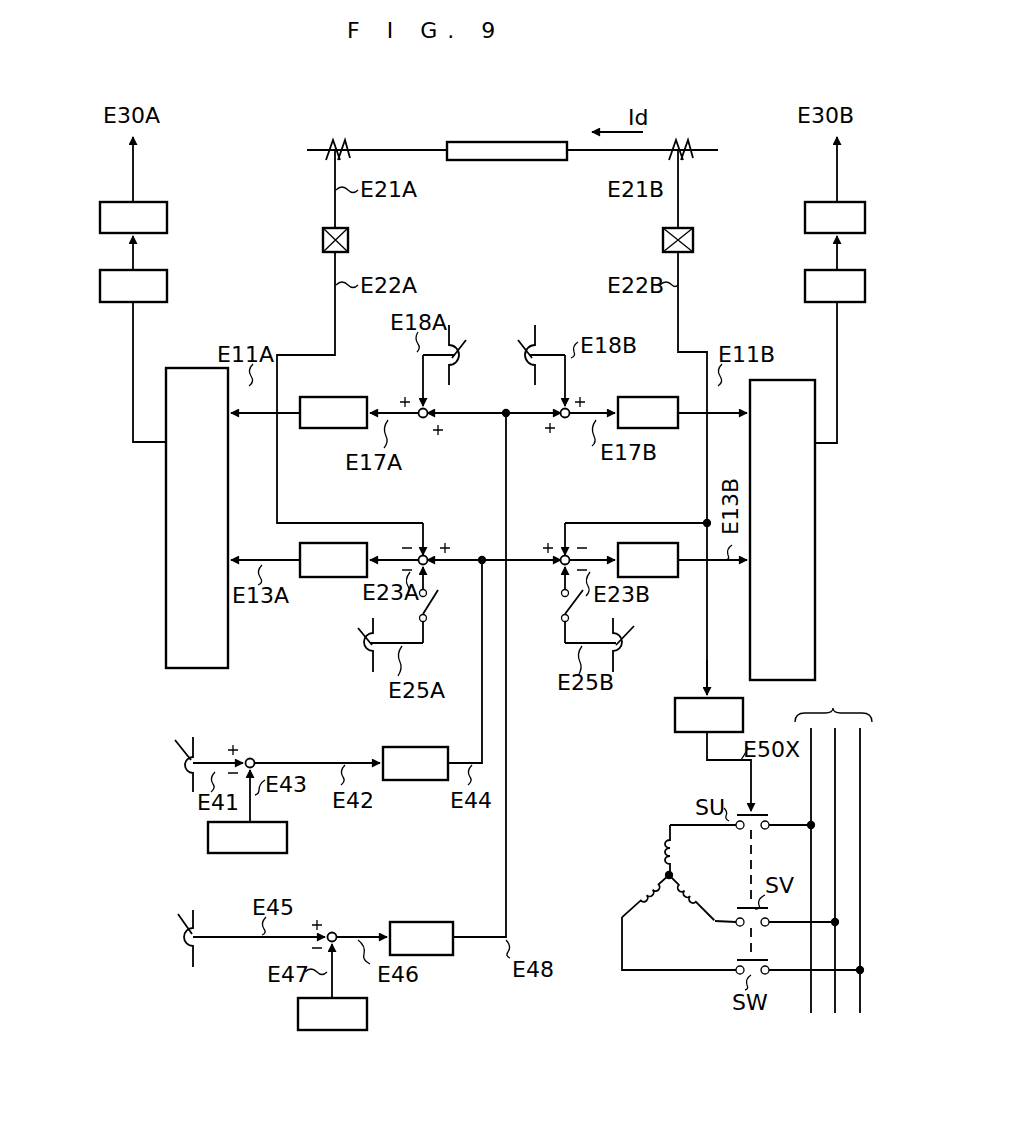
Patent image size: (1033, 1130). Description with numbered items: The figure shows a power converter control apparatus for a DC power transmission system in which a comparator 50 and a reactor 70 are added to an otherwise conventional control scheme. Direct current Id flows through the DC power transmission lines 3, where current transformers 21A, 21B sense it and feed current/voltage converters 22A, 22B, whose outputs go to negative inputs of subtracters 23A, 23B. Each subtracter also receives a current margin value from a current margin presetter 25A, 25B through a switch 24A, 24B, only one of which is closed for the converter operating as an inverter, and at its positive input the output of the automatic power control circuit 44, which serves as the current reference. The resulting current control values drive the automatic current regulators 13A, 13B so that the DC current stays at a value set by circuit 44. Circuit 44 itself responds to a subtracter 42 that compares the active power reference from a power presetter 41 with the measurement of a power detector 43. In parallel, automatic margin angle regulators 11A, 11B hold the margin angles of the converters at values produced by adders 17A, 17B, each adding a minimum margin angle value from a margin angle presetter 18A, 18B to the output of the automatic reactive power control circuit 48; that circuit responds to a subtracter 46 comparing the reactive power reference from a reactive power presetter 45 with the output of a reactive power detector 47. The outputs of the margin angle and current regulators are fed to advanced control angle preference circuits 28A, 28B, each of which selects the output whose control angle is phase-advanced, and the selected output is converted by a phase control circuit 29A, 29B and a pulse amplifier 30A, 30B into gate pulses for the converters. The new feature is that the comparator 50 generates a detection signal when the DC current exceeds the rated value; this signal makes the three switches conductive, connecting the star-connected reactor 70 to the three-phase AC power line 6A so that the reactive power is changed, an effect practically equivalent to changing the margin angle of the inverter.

The DC power transmission lines 3 is at (516, 142).
The current transformer 21A is at (352, 142).
The current transformer 21B is at (685, 142).
The current/voltage converter 22A is at (348, 240).
The current/voltage converter 22B is at (666, 240).
The pulse amplifier 30A is at (167, 217).
The pulse amplifier 30B is at (805, 217).
The phase control circuit 29A is at (167, 285).
The phase control circuit 29B is at (805, 285).
The advanced control angle preference circuit 28A is at (166, 584).
The advanced control angle preference circuit 28B is at (815, 590).
The automatic margin angle regulator 11A is at (347, 398).
The automatic margin angle regulator 11B is at (642, 398).
The automatic current regulator 13A is at (327, 580).
The automatic current regulator 13B is at (668, 580).
The adder 17A is at (426, 420).
The adder 17B is at (566, 420).
The margin angle presetter 18A is at (458, 348).
The margin angle presetter 18B is at (553, 348).
The subtracter 23A is at (432, 548).
The subtracter 23B is at (549, 548).
The switch 24A is at (438, 600).
The switch 24B is at (560, 607).
The current margin presetter 25A is at (366, 642).
The current margin presetter 25B is at (622, 650).
The power presetter 41 is at (198, 760).
The subtracter 42 is at (249, 759).
The power detector 43 is at (287, 838).
The automatic power control circuit 44 is at (416, 746).
The reactive power presetter 45 is at (200, 933).
The subtracter 46 is at (335, 930).
The reactive power detector 47 is at (367, 1015).
The automatic reactive power control circuit 48 is at (429, 916).
The comparator 50 is at (743, 715).
The 3-phase AC power line 6A is at (839, 849).
The reactor 70 is at (662, 875).